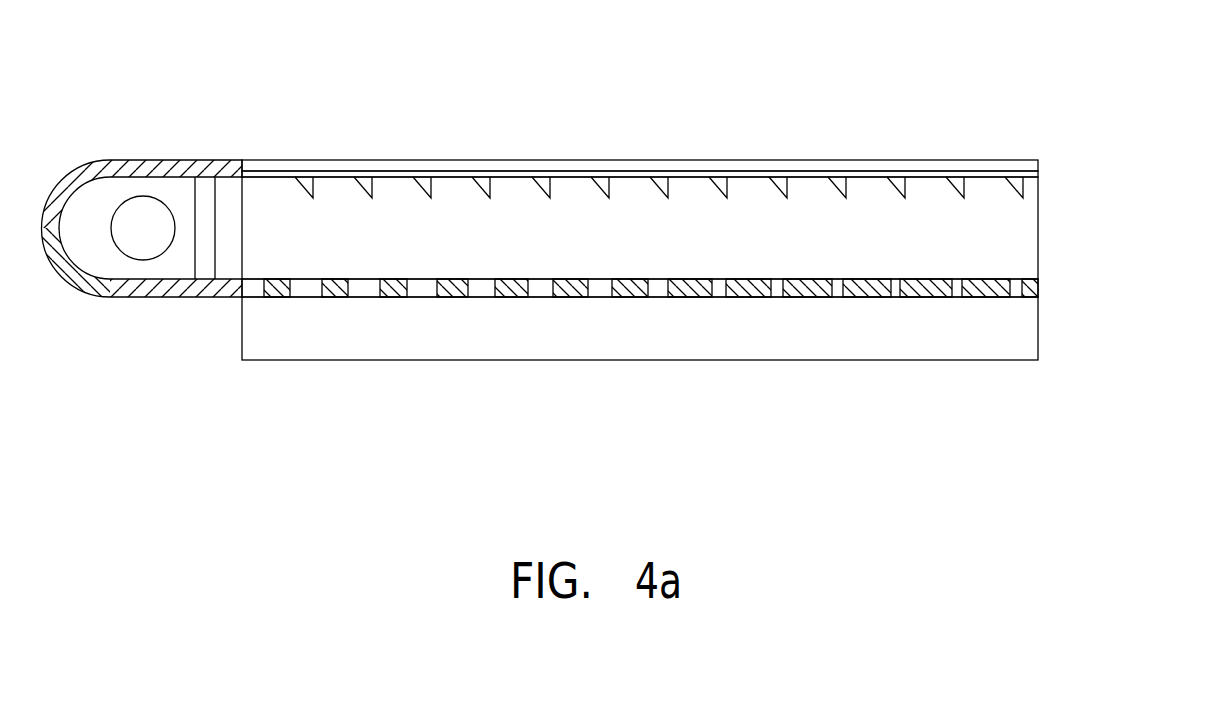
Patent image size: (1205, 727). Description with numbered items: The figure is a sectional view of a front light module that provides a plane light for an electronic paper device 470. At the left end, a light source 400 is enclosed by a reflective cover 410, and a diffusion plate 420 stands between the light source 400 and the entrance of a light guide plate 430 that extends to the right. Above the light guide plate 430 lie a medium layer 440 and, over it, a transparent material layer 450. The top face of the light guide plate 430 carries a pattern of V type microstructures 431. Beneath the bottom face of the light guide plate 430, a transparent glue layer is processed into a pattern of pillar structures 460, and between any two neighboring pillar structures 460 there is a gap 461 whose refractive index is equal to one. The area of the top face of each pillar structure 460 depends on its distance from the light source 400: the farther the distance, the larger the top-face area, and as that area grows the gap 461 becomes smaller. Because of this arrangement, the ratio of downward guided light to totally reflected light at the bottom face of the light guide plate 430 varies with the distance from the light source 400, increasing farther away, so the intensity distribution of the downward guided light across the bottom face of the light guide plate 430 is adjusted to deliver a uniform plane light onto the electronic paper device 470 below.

The light source 400 is at (128, 243).
The reflective cover 410 is at (74, 180).
The diffusion plate 420 is at (205, 195).
The light guide plate 430 is at (1020, 236).
The V type microstructures 431 is at (427, 188).
The medium layer 440 is at (1030, 174).
The transparent material layer 450 is at (592, 170).
The pillar structures 460 is at (707, 349).
The gap 461 is at (365, 287).
The electronic paper device 470 is at (1008, 330).